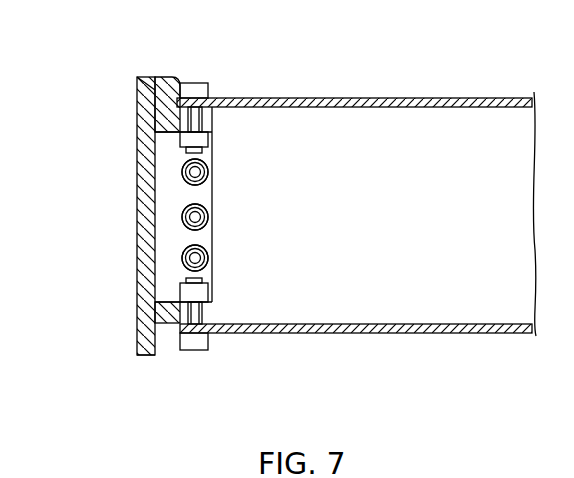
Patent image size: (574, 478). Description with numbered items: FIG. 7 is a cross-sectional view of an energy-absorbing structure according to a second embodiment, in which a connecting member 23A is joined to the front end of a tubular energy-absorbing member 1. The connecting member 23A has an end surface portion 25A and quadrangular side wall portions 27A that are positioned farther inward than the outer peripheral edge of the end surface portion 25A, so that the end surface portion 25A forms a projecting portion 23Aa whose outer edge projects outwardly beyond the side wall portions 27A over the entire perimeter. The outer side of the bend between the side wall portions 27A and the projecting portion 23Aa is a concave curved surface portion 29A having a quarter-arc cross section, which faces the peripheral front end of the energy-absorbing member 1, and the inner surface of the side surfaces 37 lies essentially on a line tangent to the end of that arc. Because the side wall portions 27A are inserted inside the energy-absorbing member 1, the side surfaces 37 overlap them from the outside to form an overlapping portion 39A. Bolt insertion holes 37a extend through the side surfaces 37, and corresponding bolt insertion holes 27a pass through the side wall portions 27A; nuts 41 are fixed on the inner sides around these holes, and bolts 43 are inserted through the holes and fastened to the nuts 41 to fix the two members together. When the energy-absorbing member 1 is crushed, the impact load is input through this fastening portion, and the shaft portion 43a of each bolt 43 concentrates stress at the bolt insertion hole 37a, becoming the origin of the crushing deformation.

The energy-absorbing member 1 is at (356, 201).
The side surface 37 is at (448, 133).
The bolt insertion hole 37a is at (168, 118).
The connecting member 23A is at (125, 231).
The projecting portion 23Aa is at (145, 355).
The end surface portion 25A is at (137, 212).
The side wall portion 27A is at (156, 142).
The bolt insertion hole 27a is at (215, 152).
The curved surface portion 29A is at (164, 80).
The overlapping portion 39A is at (240, 196).
The nut 41 is at (213, 144).
The bolt 43 is at (198, 83).
The shaft portion 43a is at (204, 122).